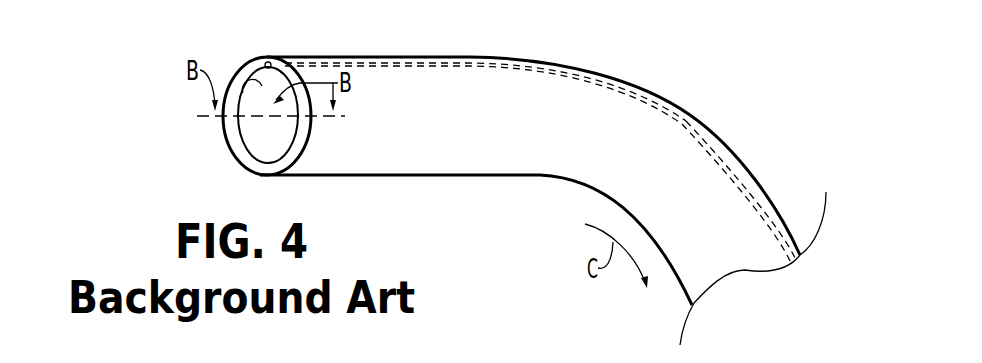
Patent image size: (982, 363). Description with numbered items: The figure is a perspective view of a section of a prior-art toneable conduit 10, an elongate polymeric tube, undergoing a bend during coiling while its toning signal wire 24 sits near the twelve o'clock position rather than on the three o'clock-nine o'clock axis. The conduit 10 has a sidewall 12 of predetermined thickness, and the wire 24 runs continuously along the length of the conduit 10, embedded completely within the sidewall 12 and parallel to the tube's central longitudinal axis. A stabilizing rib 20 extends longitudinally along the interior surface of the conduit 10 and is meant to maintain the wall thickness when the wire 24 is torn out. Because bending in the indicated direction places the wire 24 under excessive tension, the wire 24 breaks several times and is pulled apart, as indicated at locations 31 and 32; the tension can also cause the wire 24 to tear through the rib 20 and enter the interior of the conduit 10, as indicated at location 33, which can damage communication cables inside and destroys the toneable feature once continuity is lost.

The toneable conduit 10 is at (403, 178).
The sidewall 12 is at (296, 155).
The stabilizing rib 20 is at (247, 90).
The toning signal wire 24 is at (270, 62).
The location 31 is at (680, 98).
The location 32 is at (786, 199).
The location 33 is at (750, 164).